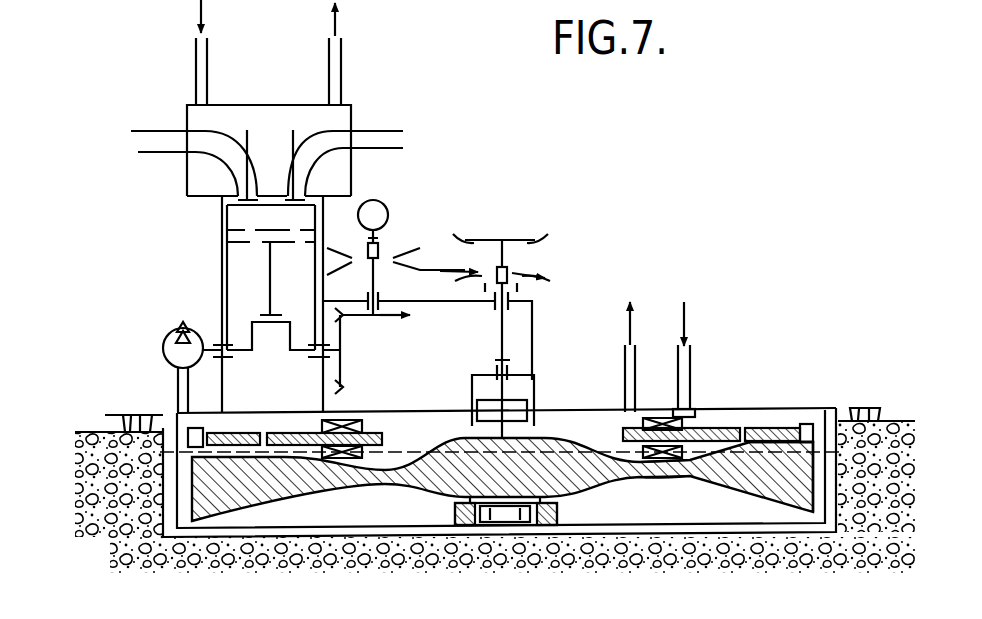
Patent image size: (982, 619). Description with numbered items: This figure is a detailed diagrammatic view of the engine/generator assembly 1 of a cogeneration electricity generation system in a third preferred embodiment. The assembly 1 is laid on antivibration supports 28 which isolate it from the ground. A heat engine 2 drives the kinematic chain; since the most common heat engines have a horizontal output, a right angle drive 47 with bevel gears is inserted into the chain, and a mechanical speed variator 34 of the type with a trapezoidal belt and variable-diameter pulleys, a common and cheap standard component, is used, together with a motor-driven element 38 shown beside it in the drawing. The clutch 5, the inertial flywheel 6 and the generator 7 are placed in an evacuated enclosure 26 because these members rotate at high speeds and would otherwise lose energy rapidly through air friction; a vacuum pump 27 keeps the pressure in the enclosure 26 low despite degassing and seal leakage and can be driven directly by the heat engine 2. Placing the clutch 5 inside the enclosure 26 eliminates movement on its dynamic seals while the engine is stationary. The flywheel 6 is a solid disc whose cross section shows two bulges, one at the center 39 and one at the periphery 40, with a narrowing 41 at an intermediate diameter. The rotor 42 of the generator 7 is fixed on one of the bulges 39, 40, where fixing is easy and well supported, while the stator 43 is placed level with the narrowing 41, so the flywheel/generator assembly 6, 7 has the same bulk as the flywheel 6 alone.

The engine/generator assembly 1 is at (663, 205).
The heat engine 2 is at (108, 126).
The clutch 5 is at (535, 393).
The inertial flywheel 6 is at (233, 477).
The generator 7 is at (753, 388).
The evacuated enclosure 26 is at (173, 418).
The vacuum pump 27 is at (166, 338).
The antivibration supports 28 is at (127, 416).
The mechanical speed variator 34 is at (470, 223).
The motor driven valve 38 is at (385, 206).
The center bulge 39 is at (548, 460).
The periphery bulge 40 is at (785, 473).
The narrowing 41 is at (668, 472).
The rotor 42 is at (772, 430).
The stator 43 is at (708, 430).
The right angle drive 47 is at (367, 335).